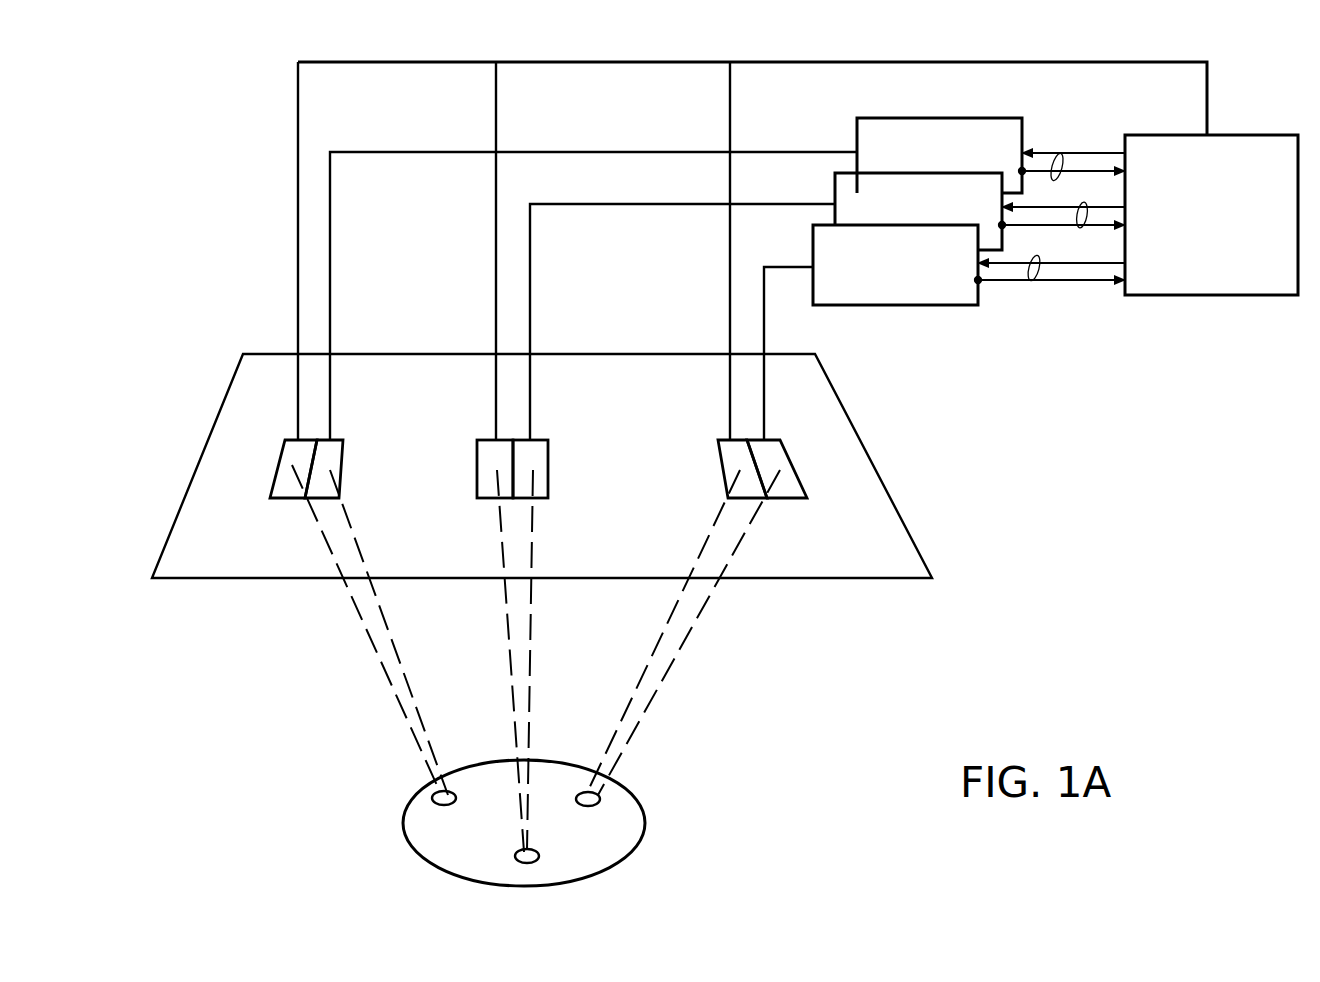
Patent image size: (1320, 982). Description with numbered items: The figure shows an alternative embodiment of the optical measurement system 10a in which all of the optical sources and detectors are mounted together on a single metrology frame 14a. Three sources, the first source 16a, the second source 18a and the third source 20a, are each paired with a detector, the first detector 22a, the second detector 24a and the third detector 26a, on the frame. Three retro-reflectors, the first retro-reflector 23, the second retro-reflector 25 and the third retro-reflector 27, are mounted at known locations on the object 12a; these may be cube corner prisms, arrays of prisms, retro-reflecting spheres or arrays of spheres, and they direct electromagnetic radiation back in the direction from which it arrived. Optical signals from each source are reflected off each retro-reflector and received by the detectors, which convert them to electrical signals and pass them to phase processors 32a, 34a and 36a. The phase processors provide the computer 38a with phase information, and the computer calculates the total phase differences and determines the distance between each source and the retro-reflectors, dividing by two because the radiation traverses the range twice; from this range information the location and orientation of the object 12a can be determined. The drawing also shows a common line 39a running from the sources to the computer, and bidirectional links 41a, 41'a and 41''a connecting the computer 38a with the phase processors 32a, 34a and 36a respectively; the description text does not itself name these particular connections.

The optical measurement system 10a is at (190, 269).
The object 12a is at (648, 810).
The metrology frame 14a is at (878, 465).
The source S1 16a is at (283, 453).
The source S2 18a is at (477, 452).
The source S3 20a is at (717, 452).
The detector D1 22a is at (345, 455).
The retro-reflector R1 23 is at (432, 798).
The detector D2 24a is at (548, 452).
The retro-reflector R2 25 is at (538, 860).
The detector D3 26a is at (783, 450).
The retro-reflector R3 27 is at (580, 793).
The phase processor 32a is at (925, 118).
The phase processor 34a is at (888, 173).
The phase processor 36a is at (893, 305).
The computer 38a is at (1225, 295).
The source drive bus 39a is at (997, 62).
The first data link 41a is at (1060, 153).
The second data link 41'a is at (1073, 273).
The third data link 41''a is at (1050, 309).